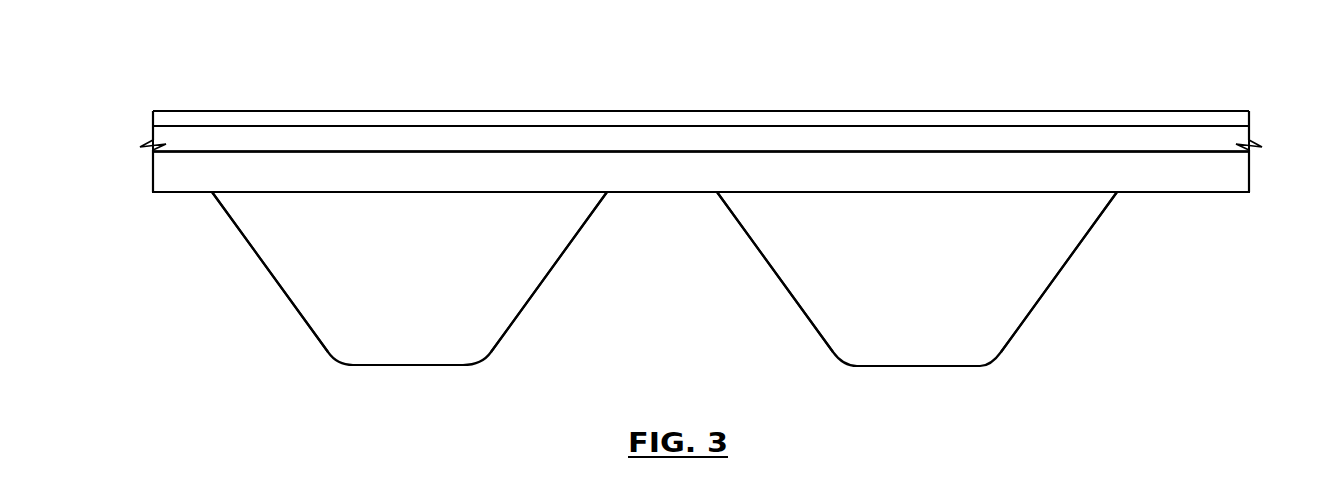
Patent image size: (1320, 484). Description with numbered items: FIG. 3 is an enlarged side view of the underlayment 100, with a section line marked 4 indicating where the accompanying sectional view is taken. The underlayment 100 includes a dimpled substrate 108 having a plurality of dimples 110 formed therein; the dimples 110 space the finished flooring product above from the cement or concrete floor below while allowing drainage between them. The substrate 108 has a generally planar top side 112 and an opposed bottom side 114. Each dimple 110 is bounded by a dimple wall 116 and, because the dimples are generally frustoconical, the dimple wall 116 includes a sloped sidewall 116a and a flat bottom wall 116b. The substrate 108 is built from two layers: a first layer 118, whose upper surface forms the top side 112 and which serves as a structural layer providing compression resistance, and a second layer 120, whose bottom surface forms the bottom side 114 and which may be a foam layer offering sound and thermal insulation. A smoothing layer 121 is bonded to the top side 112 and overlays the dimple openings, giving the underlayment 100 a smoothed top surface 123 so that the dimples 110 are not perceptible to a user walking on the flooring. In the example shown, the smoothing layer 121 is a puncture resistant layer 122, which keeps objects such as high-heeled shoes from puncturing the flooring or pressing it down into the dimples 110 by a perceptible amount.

The underlayment 100 is at (1108, 69).
The substrate 108 is at (852, 128).
The dimples 110 is at (492, 341).
The top side 112 is at (727, 125).
The bottom side 114 is at (662, 193).
The dimple wall 116 is at (540, 286).
The sidewall 116a is at (303, 258).
The bottom wall 116b is at (435, 365).
The first layer 118 is at (533, 140).
The second layer 120 is at (598, 168).
The smoothing layer 121 is at (202, 117).
The puncture resistant layer 122 is at (990, 117).
The smoothed top surface 123 is at (456, 98).
The section line 4- 4 is at (403, 95).